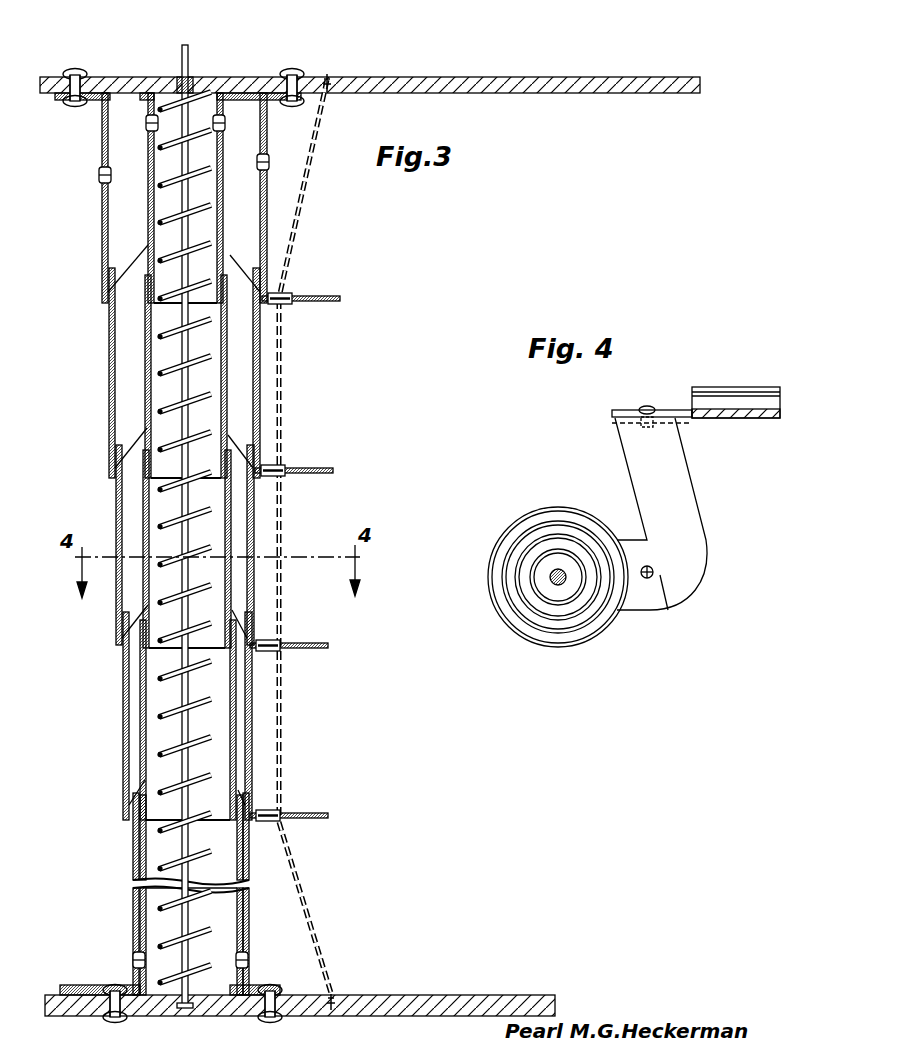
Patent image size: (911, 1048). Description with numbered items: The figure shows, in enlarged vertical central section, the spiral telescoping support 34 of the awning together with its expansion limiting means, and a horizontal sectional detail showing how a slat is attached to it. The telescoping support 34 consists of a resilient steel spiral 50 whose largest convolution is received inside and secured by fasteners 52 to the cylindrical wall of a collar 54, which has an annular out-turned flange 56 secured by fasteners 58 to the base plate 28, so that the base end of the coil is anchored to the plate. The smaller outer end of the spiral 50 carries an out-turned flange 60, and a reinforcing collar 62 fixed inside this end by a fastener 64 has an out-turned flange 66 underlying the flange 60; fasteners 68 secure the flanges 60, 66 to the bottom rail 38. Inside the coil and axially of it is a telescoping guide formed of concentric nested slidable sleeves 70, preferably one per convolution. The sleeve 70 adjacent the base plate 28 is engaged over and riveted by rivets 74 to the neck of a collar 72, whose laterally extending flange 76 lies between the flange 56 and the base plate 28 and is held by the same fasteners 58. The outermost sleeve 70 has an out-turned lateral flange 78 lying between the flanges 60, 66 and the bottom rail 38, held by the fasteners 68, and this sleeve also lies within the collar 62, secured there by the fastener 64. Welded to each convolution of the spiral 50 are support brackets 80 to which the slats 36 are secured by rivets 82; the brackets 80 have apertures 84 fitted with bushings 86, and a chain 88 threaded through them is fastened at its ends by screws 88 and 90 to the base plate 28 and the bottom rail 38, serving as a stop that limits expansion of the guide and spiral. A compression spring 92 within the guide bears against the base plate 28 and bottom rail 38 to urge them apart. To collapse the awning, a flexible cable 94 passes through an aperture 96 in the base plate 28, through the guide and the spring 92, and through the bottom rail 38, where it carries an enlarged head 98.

In FIG. 3, the base plate 28 is at (445, 78).
In FIG. 3, the telescoping support 34 is at (108, 410).
In FIG. 4, the slats 36 is at (727, 405).
In FIG. 3, the bottom rail 38 is at (408, 1008).
In FIG. 3, the steel spiral 50 is at (152, 544).
In FIG. 4, the steel spiral 50 is at (602, 628).
In FIG. 3, the fasteners 52 is at (99, 175).
In FIG. 3, the collar 54 is at (103, 135).
In FIG. 3, the annular out-turned flange 56 is at (62, 101).
In FIG. 3, the fasteners 58 is at (83, 85).
In FIG. 3, the out-turned flange 60 is at (115, 986).
In FIG. 3, the reinforcing collar 62 is at (133, 957).
In FIG. 3, the fastener 64 is at (146, 960).
In FIG. 3, the out-turned flange 66 is at (90, 988).
In FIG. 3, the fasteners 68 is at (115, 1005).
In FIG. 3, the sleeves 70 is at (223, 195).
In FIG. 4, the sleeves 70 is at (561, 630).
In FIG. 3, the collar 72 is at (222, 100).
In FIG. 3, the rivets 74 is at (223, 126).
In FIG. 3, the laterally extending flange 76 is at (243, 97).
In FIG. 3, the out-turned lateral flange 78 is at (280, 1005).
In FIG. 3, the support brackets 80 is at (290, 296).
In FIG. 4, the support brackets 80 is at (683, 492).
In FIG. 4, the rivets 82 is at (647, 408).
In FIG. 4, the apertures 84 is at (650, 582).
In FIG. 3, the bushings 86 is at (283, 816).
In FIG. 3, the chain 88 is at (330, 90).
In FIG. 4, the chain 88 is at (653, 568).
In FIG. 3, the screw 90 is at (338, 988).
In FIG. 3, the compression spring 92 is at (165, 488).
In FIG. 4, the compression spring 92 is at (532, 578).
In FIG. 3, the flexible cable 94 is at (188, 60).
In FIG. 4, the flexible cable 94 is at (553, 582).
In FIG. 3, the aperture 96 is at (180, 85).
In FIG. 3, the enlarged head 98 is at (186, 1009).